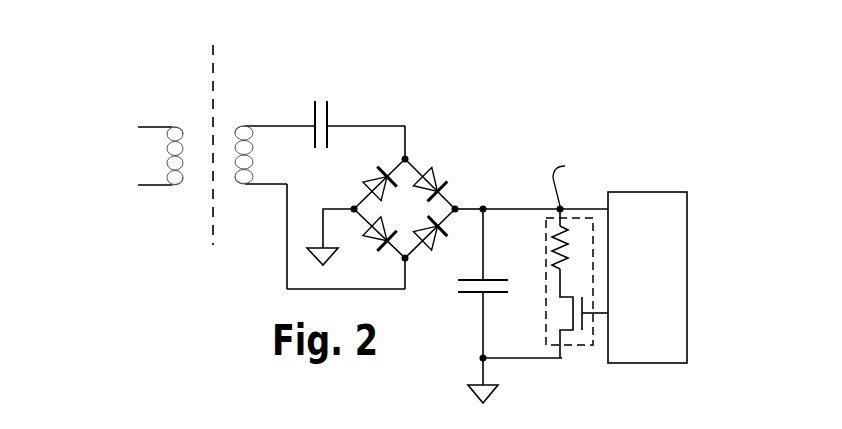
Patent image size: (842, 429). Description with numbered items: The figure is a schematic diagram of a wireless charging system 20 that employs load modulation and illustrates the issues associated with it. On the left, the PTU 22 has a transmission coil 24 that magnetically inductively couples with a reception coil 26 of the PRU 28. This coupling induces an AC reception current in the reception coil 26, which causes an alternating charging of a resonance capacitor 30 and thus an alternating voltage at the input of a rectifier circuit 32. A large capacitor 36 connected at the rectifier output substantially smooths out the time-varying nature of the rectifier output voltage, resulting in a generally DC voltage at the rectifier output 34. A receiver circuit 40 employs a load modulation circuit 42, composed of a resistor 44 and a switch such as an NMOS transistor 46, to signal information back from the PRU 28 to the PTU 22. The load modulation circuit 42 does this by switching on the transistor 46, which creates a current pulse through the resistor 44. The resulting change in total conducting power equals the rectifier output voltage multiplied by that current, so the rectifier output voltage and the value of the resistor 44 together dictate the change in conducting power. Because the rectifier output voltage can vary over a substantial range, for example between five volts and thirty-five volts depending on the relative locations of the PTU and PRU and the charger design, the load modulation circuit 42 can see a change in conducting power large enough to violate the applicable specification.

The wireless charging system 20 is at (488, 228).
The PTU 22 is at (151, 141).
The transmission coil 24 is at (178, 126).
The reception coil 26 is at (243, 126).
The PRU 28 is at (359, 171).
The resonance capacitor 30 is at (328, 112).
The rectifier circuit 32 is at (414, 163).
The rectifier output (Vrect) 34 is at (481, 206).
The large capacitor 36 is at (461, 293).
The receiver circuit 40 is at (671, 192).
The load modulation circuit 42 is at (563, 274).
The resistor 44 is at (556, 232).
The switch (NMOS transistor) 46 is at (550, 326).